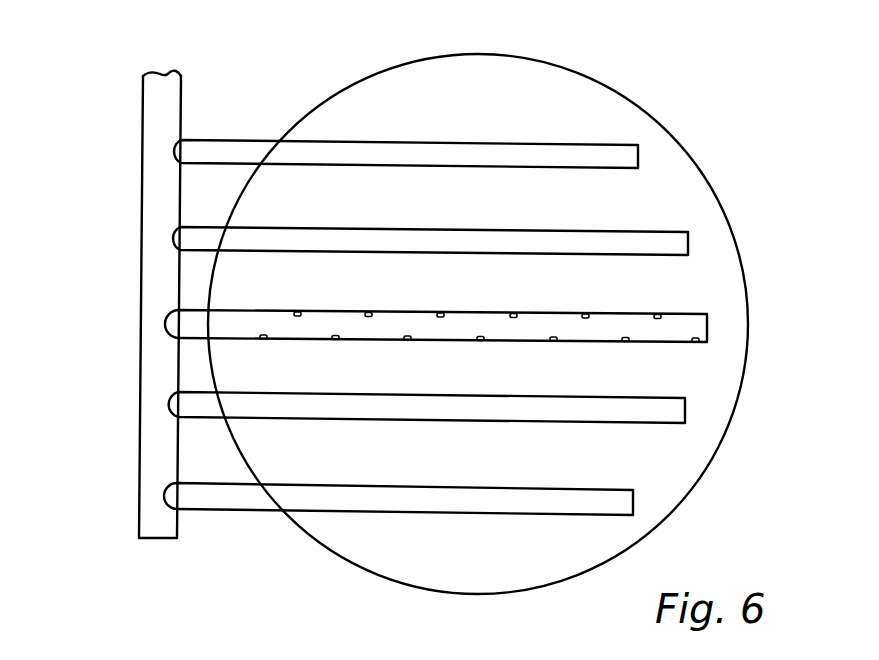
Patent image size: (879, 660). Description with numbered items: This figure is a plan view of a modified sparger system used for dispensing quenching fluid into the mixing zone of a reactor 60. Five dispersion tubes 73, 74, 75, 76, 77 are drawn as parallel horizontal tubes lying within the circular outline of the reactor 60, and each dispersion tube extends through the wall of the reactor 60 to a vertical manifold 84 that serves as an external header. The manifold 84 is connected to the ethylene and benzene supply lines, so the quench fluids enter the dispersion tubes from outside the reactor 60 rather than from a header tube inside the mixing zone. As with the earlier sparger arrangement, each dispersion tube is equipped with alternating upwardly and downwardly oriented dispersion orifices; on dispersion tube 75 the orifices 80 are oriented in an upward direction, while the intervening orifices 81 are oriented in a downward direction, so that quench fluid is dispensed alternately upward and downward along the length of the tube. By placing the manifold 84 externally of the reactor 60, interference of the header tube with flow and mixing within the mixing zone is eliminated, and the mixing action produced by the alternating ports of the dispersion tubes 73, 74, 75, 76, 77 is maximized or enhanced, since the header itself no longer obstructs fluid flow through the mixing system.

The reactor 60 is at (703, 173).
The manifold 84 is at (147, 128).
The dispersion tube 73 is at (603, 515).
The dispersion tube 74 is at (650, 423).
The dispersion tube 75 is at (592, 343).
The dispersion tube 76 is at (618, 255).
The dispersion tube 77 is at (585, 168).
The orifices 80 is at (440, 312).
The orifices 81 is at (335, 339).